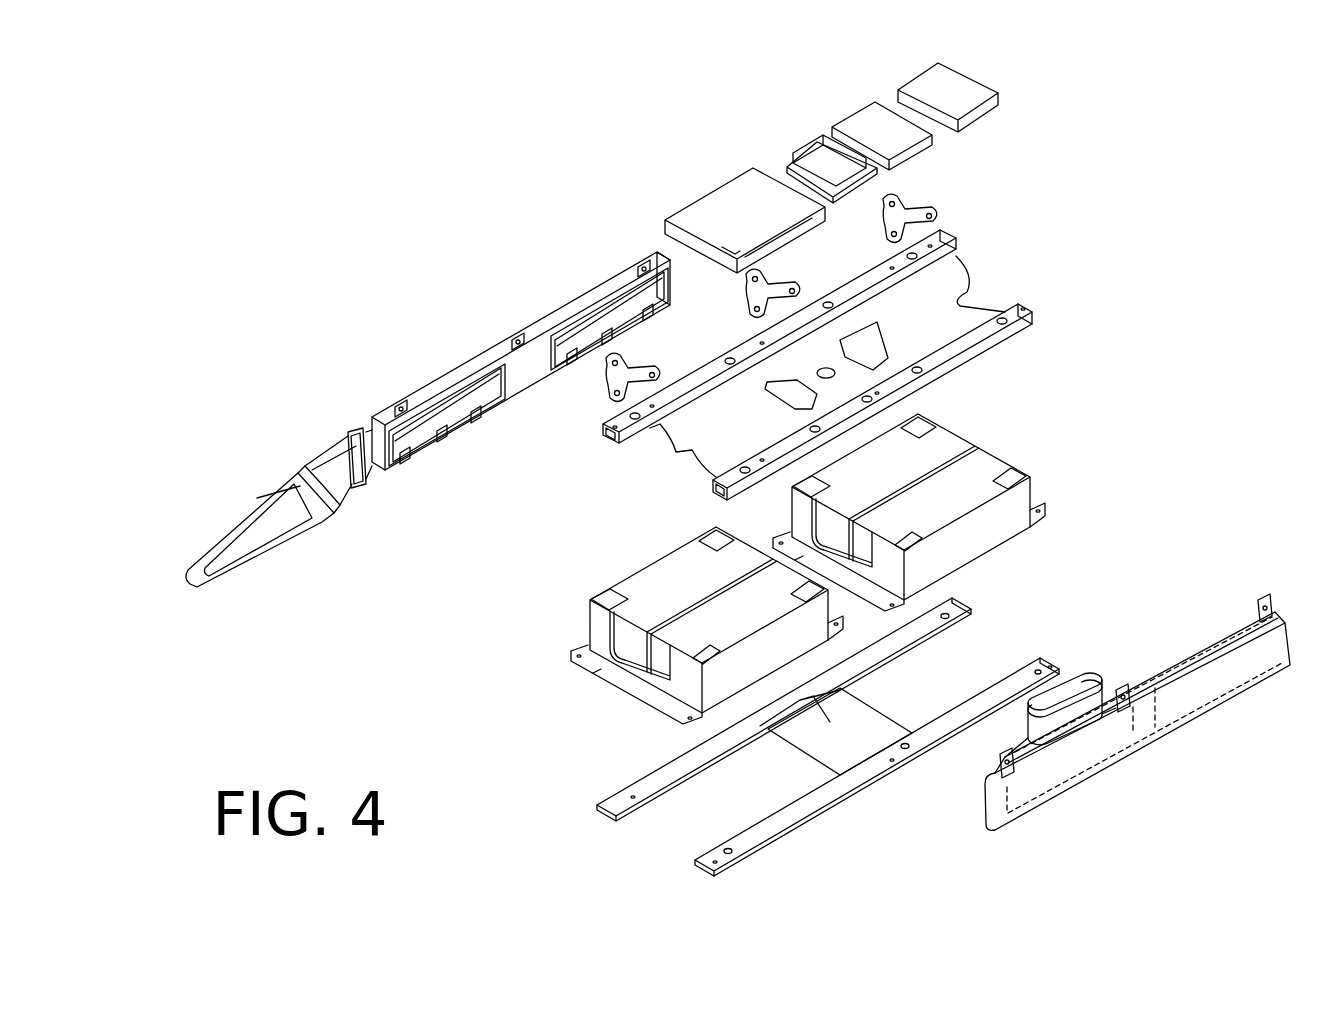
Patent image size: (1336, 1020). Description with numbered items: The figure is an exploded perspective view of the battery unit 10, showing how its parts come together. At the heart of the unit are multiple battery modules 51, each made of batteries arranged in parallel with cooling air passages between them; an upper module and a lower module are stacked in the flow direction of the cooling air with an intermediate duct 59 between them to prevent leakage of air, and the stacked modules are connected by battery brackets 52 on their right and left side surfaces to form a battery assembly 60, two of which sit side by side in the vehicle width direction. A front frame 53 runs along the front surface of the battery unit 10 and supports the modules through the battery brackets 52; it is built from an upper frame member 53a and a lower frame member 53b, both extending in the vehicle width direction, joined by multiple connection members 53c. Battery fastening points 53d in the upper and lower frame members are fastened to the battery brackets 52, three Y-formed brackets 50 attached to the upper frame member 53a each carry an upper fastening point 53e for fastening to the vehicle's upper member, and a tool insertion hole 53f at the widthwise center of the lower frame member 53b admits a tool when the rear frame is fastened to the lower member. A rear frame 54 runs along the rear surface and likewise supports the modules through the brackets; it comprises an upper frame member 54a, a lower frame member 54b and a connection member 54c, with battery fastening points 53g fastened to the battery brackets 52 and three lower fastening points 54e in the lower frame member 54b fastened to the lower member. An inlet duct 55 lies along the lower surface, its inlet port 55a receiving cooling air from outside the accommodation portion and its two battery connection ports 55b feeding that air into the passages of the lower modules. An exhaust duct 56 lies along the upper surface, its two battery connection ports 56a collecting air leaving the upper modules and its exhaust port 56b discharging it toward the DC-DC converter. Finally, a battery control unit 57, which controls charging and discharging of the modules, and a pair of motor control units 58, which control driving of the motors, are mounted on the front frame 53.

The battery unit 10 is at (1107, 347).
The Y-formed bracket 50 is at (888, 230).
The battery module 51 is at (972, 474).
The battery bracket 52 is at (1033, 488).
The front frame 53 is at (638, 460).
The upper frame member 53a is at (604, 437).
The lower frame member 53b is at (718, 490).
The connection member 53c is at (967, 293).
The battery fastening point 53d is at (826, 302).
The upper fastening point 53e is at (898, 203).
The tool insertion hole 53f is at (872, 399).
The battery fastening point 53g is at (1035, 671).
The rear frame 54 is at (596, 827).
The upper frame member 54a is at (618, 803).
The lower frame member 54b is at (797, 815).
The connection member 54c is at (878, 722).
The lower fastening point 54e is at (1050, 665).
The inlet duct 55 is at (1140, 723).
The inlet port 55a is at (1088, 674).
The battery connection port 55b is at (1240, 697).
The exhaust duct 56 is at (510, 343).
The battery connection port 56a is at (610, 315).
The exhaust port 56b is at (268, 530).
The battery control unit 57 is at (718, 202).
The motor control unit 58 is at (862, 118).
The intermediate duct 59 is at (903, 497).
The battery assembly 60 is at (1009, 552).